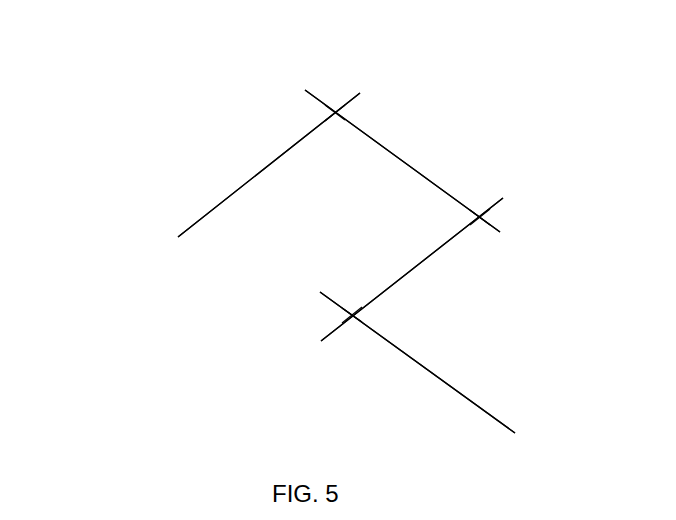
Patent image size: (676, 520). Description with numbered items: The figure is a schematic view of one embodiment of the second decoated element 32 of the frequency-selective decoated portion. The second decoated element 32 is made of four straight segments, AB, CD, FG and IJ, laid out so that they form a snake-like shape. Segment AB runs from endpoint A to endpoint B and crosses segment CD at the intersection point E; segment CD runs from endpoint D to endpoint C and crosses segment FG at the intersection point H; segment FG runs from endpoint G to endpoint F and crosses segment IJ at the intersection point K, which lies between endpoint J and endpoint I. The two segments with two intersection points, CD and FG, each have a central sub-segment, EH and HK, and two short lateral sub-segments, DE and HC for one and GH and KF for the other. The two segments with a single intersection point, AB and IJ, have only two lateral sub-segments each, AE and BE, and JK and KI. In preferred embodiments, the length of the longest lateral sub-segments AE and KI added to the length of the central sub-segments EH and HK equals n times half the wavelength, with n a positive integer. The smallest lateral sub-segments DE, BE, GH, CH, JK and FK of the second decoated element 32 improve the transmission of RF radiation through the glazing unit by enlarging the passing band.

The second decoated element 32 is at (139, 50).
The endpoint of segment AB A is at (255, 169).
The endpoint of segment AB B is at (278, 154).
The endpoint of segment CD C is at (415, 170).
The endpoint of segment CD D is at (393, 152).
The intersection point E is at (335, 128).
The endpoint of segment FG F is at (397, 281).
The endpoint of segment FG G is at (424, 250).
The intersection point H is at (467, 221).
The endpoint of segment IJ I is at (428, 369).
The endpoint of segment IJ J is at (417, 350).
The intersection point K is at (362, 318).